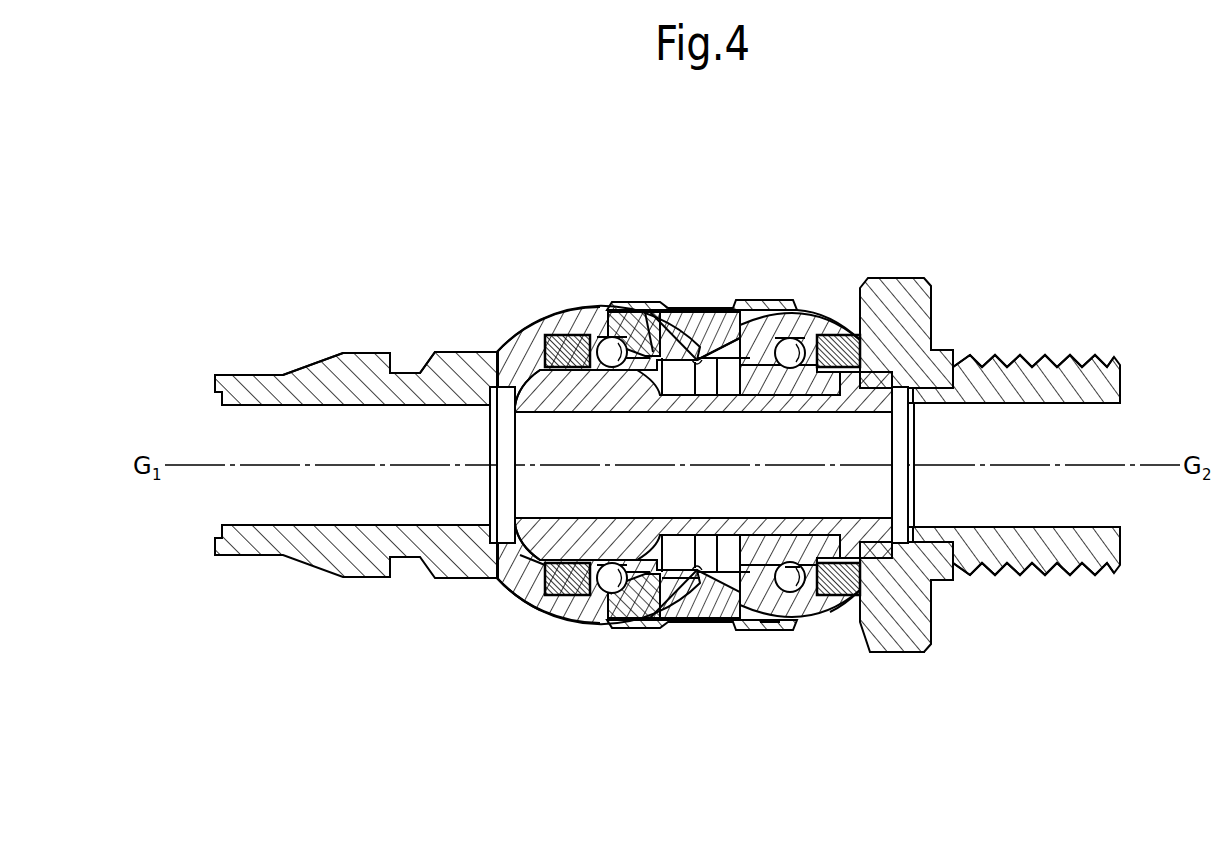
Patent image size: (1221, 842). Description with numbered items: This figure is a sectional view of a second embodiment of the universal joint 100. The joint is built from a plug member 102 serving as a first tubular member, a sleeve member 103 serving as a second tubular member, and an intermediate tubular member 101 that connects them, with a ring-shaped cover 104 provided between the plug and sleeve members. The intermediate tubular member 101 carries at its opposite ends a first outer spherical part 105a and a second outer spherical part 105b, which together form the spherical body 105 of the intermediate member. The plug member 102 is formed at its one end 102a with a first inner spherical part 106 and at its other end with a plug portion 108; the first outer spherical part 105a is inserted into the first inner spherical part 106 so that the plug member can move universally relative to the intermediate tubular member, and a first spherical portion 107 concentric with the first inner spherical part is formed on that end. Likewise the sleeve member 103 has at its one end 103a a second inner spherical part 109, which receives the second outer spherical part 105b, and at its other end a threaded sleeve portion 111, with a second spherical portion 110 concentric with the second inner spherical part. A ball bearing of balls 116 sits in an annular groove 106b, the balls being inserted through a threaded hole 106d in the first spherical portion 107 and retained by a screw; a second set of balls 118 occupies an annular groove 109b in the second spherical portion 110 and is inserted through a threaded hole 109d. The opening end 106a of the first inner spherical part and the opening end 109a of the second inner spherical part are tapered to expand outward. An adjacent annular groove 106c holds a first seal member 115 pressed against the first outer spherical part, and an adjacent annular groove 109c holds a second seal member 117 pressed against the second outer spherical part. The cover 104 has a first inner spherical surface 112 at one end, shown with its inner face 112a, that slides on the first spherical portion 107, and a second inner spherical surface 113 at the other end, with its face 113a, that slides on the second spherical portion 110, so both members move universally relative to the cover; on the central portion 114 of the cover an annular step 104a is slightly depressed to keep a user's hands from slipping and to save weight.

The universal joint 100 is at (1076, 140).
The intermediate tubular member 101 is at (745, 398).
The plug member 102 is at (382, 348).
The one end of the plug member 102a is at (654, 327).
The sleeve member 103 is at (1020, 352).
The one end of the sleeve member 103a is at (780, 330).
The cover 104 is at (713, 318).
The annular step 104a is at (712, 628).
The housing body 105 is at (505, 333).
The first outer spherical part 105a is at (500, 594).
The second outer spherical part 105b is at (924, 646).
The first inner spherical part 106 is at (612, 433).
The opening end of the first inner spherical part 106a is at (683, 628).
The annular groove 106b is at (609, 600).
The annular groove 106c is at (540, 612).
The threaded hole 106d is at (606, 628).
The first spherical portion 107 is at (550, 322).
The plug portion 108 is at (264, 373).
The second inner spherical part 109 is at (925, 325).
The opening end of the second inner spherical part 109a is at (766, 630).
The annular groove 109b is at (812, 628).
The annular groove 109c is at (905, 660).
The threaded hole 109d is at (790, 630).
The second spherical portion 110 is at (833, 330).
The threaded sleeve portion 111 is at (1091, 357).
The first inner spherical surface 112 is at (704, 326).
The collar face 112a is at (600, 327).
The second inner spherical surface 113 is at (748, 390).
The wedge ring face 113a is at (818, 318).
The central portion of the cover 114 is at (735, 320).
The first seal member 115 is at (560, 620).
The balls 116 is at (593, 330).
The second seal member 117 is at (890, 654).
The balls 118 is at (842, 336).